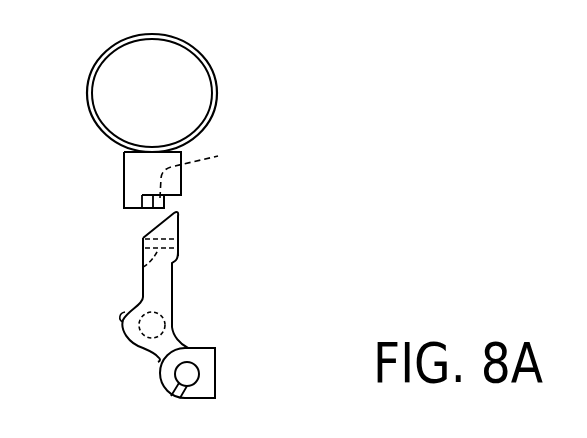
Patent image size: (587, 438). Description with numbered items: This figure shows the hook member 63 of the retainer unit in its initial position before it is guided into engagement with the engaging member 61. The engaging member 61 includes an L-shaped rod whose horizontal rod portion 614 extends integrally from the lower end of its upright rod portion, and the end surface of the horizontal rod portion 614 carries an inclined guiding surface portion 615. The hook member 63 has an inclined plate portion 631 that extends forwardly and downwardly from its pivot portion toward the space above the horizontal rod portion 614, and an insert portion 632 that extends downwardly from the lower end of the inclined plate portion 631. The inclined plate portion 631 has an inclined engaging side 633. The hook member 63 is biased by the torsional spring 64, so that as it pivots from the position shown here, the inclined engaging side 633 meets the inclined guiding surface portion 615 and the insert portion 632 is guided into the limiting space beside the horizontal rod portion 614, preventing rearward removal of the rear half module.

The engaging member 61 is at (118, 162).
The horizontal rod portion 614 is at (166, 206).
The inclined guiding surface portion 615 is at (226, 150).
The hook member 63 is at (189, 285).
The inclined plate portion 631 is at (176, 252).
The insert portion 632 is at (143, 267).
The inclined engaging side 633 is at (153, 235).
The torsional spring 64 is at (176, 314).